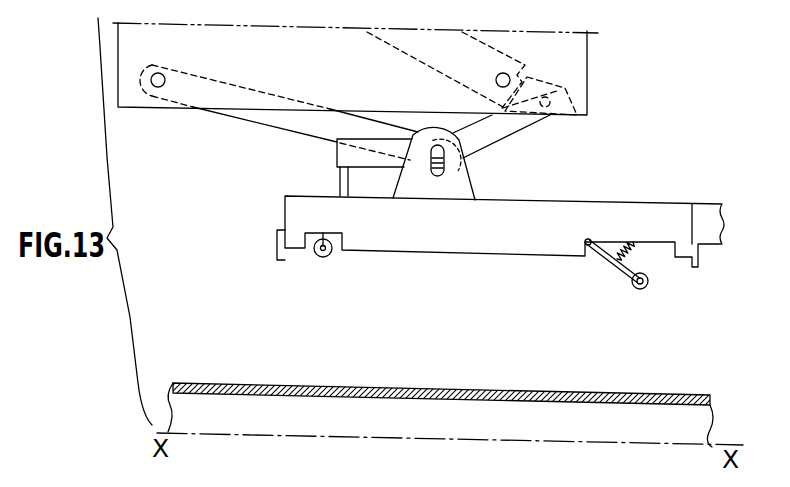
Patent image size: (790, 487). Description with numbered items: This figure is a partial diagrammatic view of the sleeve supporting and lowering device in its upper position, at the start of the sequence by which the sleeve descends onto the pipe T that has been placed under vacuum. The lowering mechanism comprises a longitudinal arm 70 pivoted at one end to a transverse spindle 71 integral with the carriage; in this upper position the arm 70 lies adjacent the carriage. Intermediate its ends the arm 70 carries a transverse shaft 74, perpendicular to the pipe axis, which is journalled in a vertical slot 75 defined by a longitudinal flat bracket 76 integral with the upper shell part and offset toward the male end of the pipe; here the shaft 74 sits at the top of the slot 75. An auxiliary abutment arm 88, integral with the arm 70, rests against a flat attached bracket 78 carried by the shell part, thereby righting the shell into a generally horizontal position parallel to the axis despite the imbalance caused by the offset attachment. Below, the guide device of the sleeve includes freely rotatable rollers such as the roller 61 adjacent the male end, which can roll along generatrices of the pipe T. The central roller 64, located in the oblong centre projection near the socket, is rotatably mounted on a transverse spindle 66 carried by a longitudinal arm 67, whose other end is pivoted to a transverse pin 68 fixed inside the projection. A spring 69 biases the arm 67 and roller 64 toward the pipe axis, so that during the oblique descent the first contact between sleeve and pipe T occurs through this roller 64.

The transverse spindle 71 is at (164, 74).
The longitudinal arm 70 is at (290, 127).
The auxiliary abutment arm 88 is at (371, 143).
The flat attached bracket 78 is at (340, 184).
The transverse shaft 74 is at (437, 145).
The vertical slot 75 is at (471, 181).
The longitudinal flat bracket 76 is at (417, 191).
The roller 61 is at (318, 256).
The transverse pin 68 is at (587, 239).
The longitudinal arm 67 is at (600, 253).
The transverse spindle 66 is at (637, 284).
The central roller 64 is at (642, 284).
The spring 69 is at (635, 250).
The pipe T is at (683, 394).